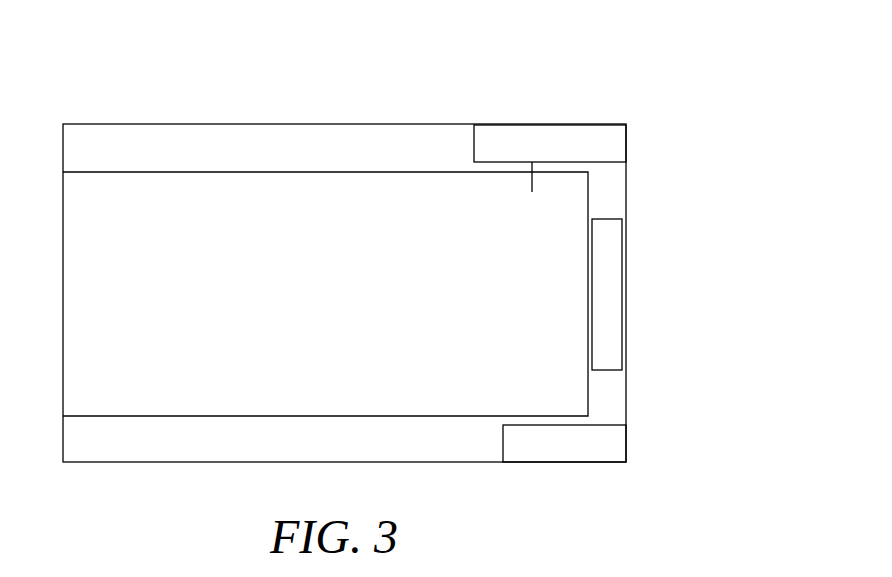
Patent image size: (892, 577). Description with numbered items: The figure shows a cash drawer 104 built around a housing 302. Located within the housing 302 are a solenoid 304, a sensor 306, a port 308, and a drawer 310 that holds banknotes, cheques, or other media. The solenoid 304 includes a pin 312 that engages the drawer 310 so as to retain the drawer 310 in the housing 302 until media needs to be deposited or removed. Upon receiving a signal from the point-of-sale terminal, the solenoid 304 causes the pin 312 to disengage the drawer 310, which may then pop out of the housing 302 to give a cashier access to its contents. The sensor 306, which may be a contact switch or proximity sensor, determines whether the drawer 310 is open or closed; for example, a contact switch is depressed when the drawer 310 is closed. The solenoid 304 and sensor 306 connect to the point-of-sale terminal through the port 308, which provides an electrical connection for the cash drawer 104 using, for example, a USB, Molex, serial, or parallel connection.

The cash drawer 104 is at (634, 47).
The housing 302 is at (156, 123).
The solenoid 304 is at (607, 165).
The sensor 306 is at (606, 424).
The port 308 is at (590, 296).
The drawer 310 is at (213, 172).
The pin 312 is at (531, 178).